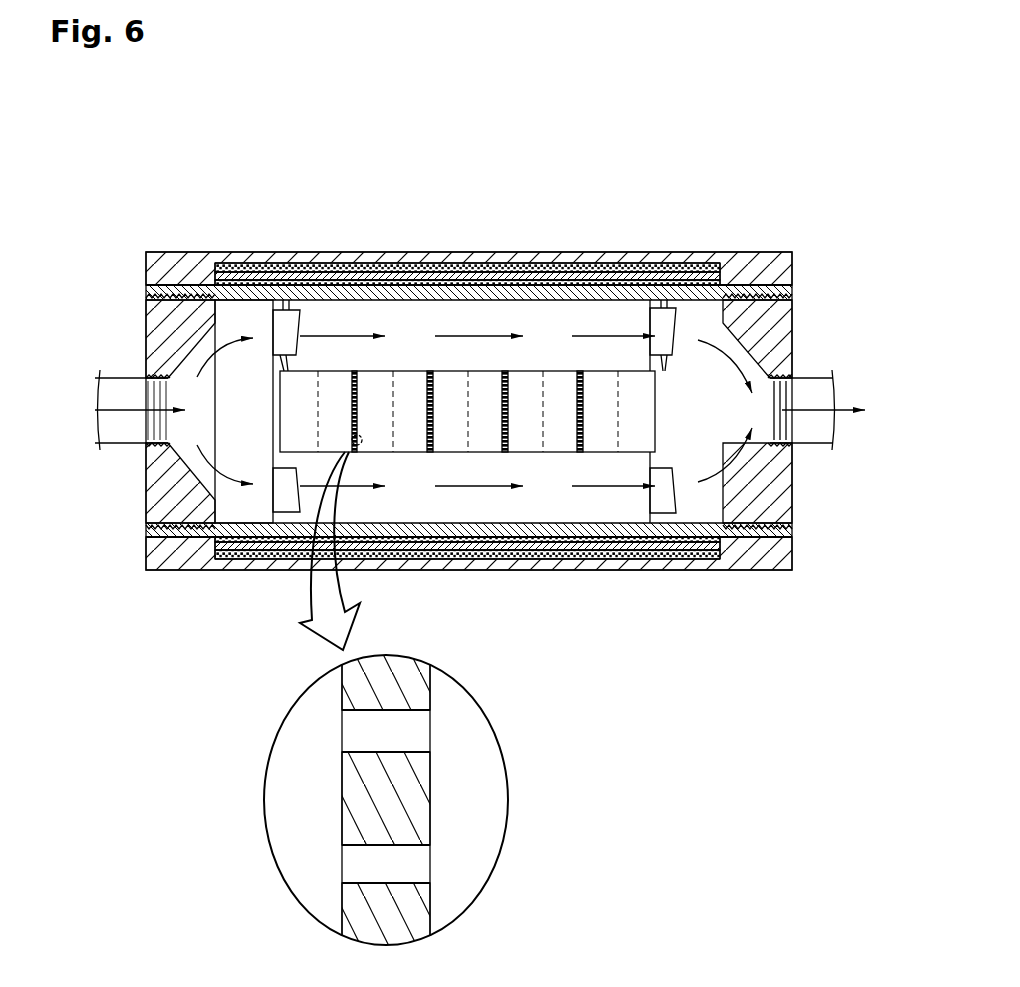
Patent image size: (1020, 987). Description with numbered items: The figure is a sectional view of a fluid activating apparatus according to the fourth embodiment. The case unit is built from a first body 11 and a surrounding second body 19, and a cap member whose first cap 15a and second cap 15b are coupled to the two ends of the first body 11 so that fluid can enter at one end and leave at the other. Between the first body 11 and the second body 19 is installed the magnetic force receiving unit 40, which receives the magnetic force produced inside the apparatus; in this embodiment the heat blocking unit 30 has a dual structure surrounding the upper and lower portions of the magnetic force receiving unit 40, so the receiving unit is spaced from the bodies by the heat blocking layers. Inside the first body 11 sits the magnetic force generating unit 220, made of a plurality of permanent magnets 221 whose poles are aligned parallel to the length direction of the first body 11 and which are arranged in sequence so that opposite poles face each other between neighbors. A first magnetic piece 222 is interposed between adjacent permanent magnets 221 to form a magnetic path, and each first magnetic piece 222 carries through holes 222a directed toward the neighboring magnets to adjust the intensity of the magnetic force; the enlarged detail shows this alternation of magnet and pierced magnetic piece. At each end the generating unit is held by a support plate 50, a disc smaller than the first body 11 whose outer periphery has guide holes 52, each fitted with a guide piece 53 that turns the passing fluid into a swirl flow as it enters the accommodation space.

The second body 19 is at (175, 265).
The first body 11 is at (245, 298).
The magnetic force receiving unit 40 is at (360, 284).
The heat blocking unit 30 is at (582, 284).
The magnetic force generating unit 220 is at (467, 426).
The permanent magnet 221 is at (605, 372).
The first magnetic piece 222 is at (578, 442).
The through hole 222a is at (417, 732).
The guide piece 53 is at (666, 306).
The guide hole 52 is at (665, 504).
The support plate 50 is at (665, 443).
The first cap 15a is at (160, 330).
The second cap 15b is at (786, 330).